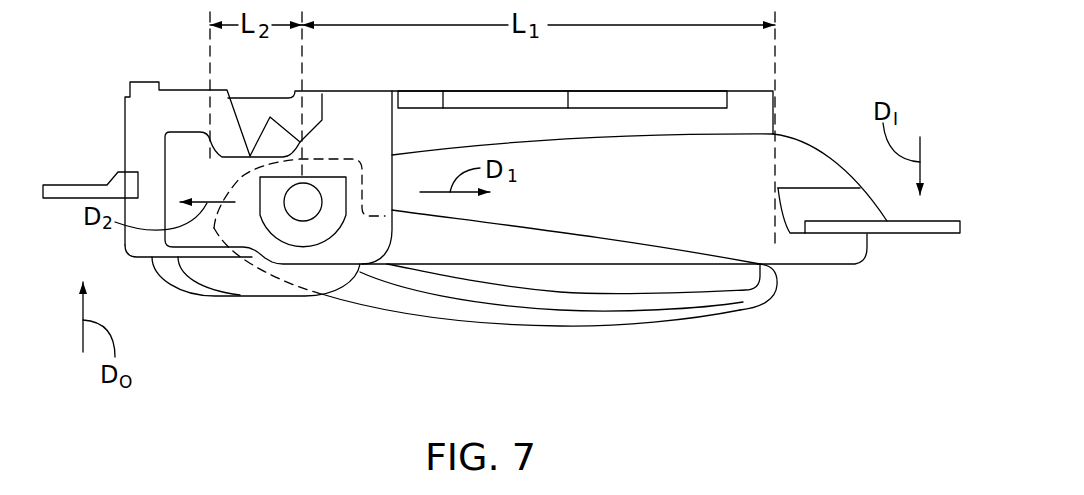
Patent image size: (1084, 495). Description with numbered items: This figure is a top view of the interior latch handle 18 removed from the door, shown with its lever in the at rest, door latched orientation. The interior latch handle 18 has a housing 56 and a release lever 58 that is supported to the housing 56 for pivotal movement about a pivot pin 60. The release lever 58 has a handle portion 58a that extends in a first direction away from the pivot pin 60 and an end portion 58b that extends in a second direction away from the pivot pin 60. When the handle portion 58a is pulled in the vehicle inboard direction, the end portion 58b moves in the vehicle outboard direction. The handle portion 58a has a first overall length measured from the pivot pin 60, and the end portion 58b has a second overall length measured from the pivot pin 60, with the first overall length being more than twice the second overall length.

The interior latch handle 18 is at (602, 386).
The housing 56 is at (838, 245).
The release lever 58 is at (655, 315).
The handle portion 58a is at (485, 302).
The end portion 58b is at (248, 264).
The pivot pin 60 is at (303, 202).